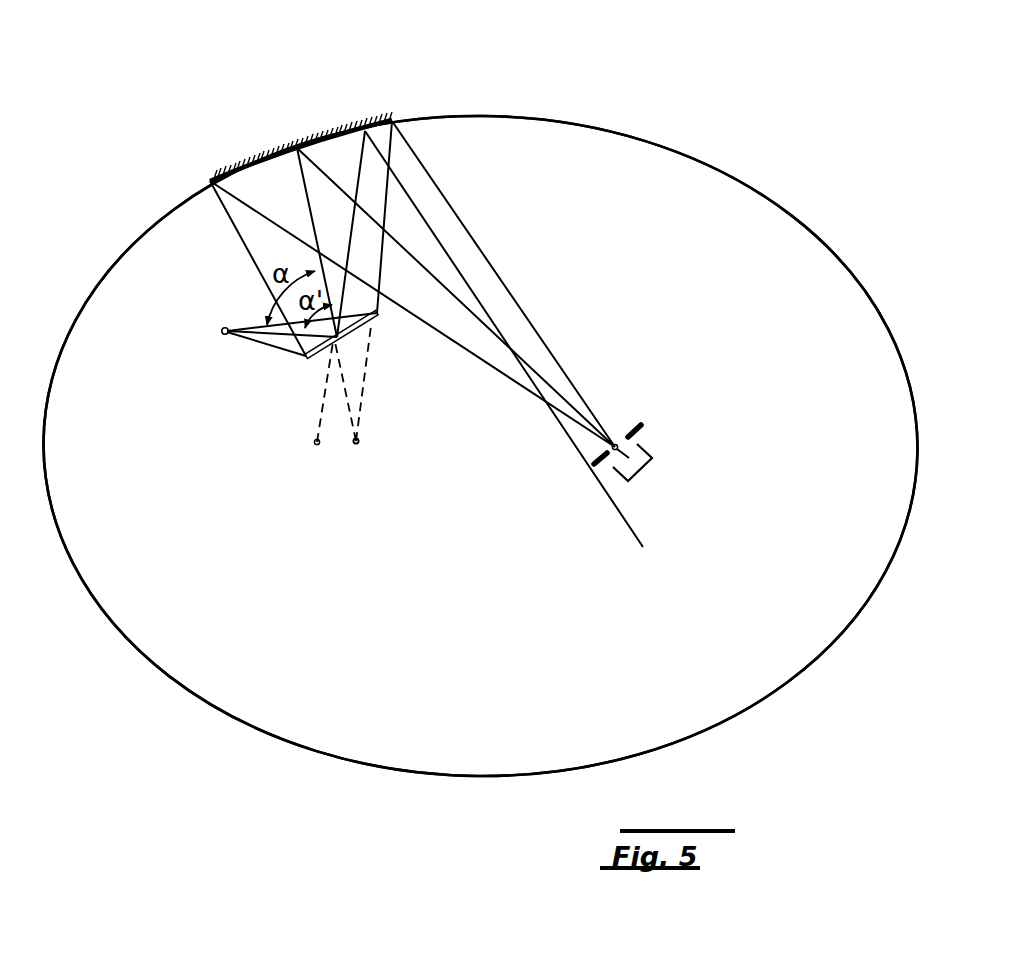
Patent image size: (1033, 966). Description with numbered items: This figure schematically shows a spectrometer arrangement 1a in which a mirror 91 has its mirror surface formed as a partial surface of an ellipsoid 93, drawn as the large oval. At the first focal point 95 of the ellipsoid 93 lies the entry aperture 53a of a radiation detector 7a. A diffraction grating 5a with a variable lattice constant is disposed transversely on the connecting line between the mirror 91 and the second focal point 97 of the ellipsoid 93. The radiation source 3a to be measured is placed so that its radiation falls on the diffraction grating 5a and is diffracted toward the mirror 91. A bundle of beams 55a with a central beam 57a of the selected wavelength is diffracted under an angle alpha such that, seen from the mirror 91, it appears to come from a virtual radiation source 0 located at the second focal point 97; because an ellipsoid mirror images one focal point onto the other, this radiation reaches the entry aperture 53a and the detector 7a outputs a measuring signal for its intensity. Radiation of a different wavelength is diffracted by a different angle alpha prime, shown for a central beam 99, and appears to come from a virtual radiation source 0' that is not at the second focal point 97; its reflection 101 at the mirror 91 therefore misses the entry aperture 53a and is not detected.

The spectrometer arrangement 1a is at (581, 89).
The radiation source 3a is at (222, 335).
The diffraction grating 5a is at (378, 320).
The radiation detector 7a is at (641, 479).
The entry aperture 53a is at (645, 428).
The bundle of beams 55a is at (271, 347).
The central beam 57a is at (260, 323).
The mirror 91 is at (241, 182).
The ellipsoid 93 is at (103, 287).
The first focal point 95 is at (618, 442).
The second focal point 97 is at (358, 448).
The central beam 99 is at (358, 166).
The reflection 101 is at (572, 449).
The virtual radiation source 0 is at (386, 421).
The virtual radiation source 0' is at (286, 466).